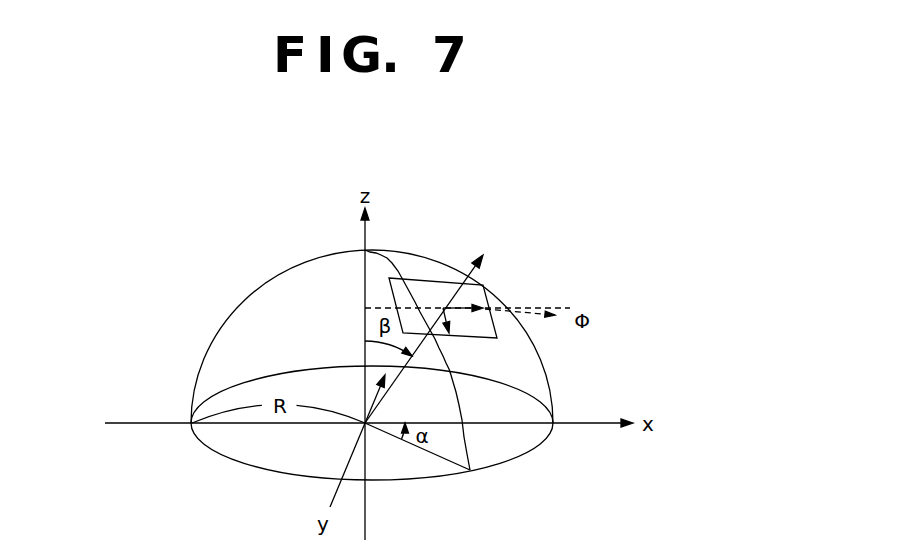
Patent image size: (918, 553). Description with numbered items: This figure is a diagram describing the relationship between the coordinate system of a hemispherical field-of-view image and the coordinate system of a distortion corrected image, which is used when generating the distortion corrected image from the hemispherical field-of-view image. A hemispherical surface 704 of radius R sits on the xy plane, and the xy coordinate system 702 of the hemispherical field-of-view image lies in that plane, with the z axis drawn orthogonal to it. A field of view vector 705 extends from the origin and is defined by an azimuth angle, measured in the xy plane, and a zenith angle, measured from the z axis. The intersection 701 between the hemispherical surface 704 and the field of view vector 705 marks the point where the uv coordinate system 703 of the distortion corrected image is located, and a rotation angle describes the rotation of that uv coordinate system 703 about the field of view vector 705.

The intersection 701 is at (431, 333).
The xy coordinate system of the hemispherical field-of-view image 702 is at (432, 480).
The uv coordinate system of the distortion corrected image 703 is at (393, 264).
The hemispherical surface 704 is at (258, 288).
The field of view vector 705 is at (483, 255).